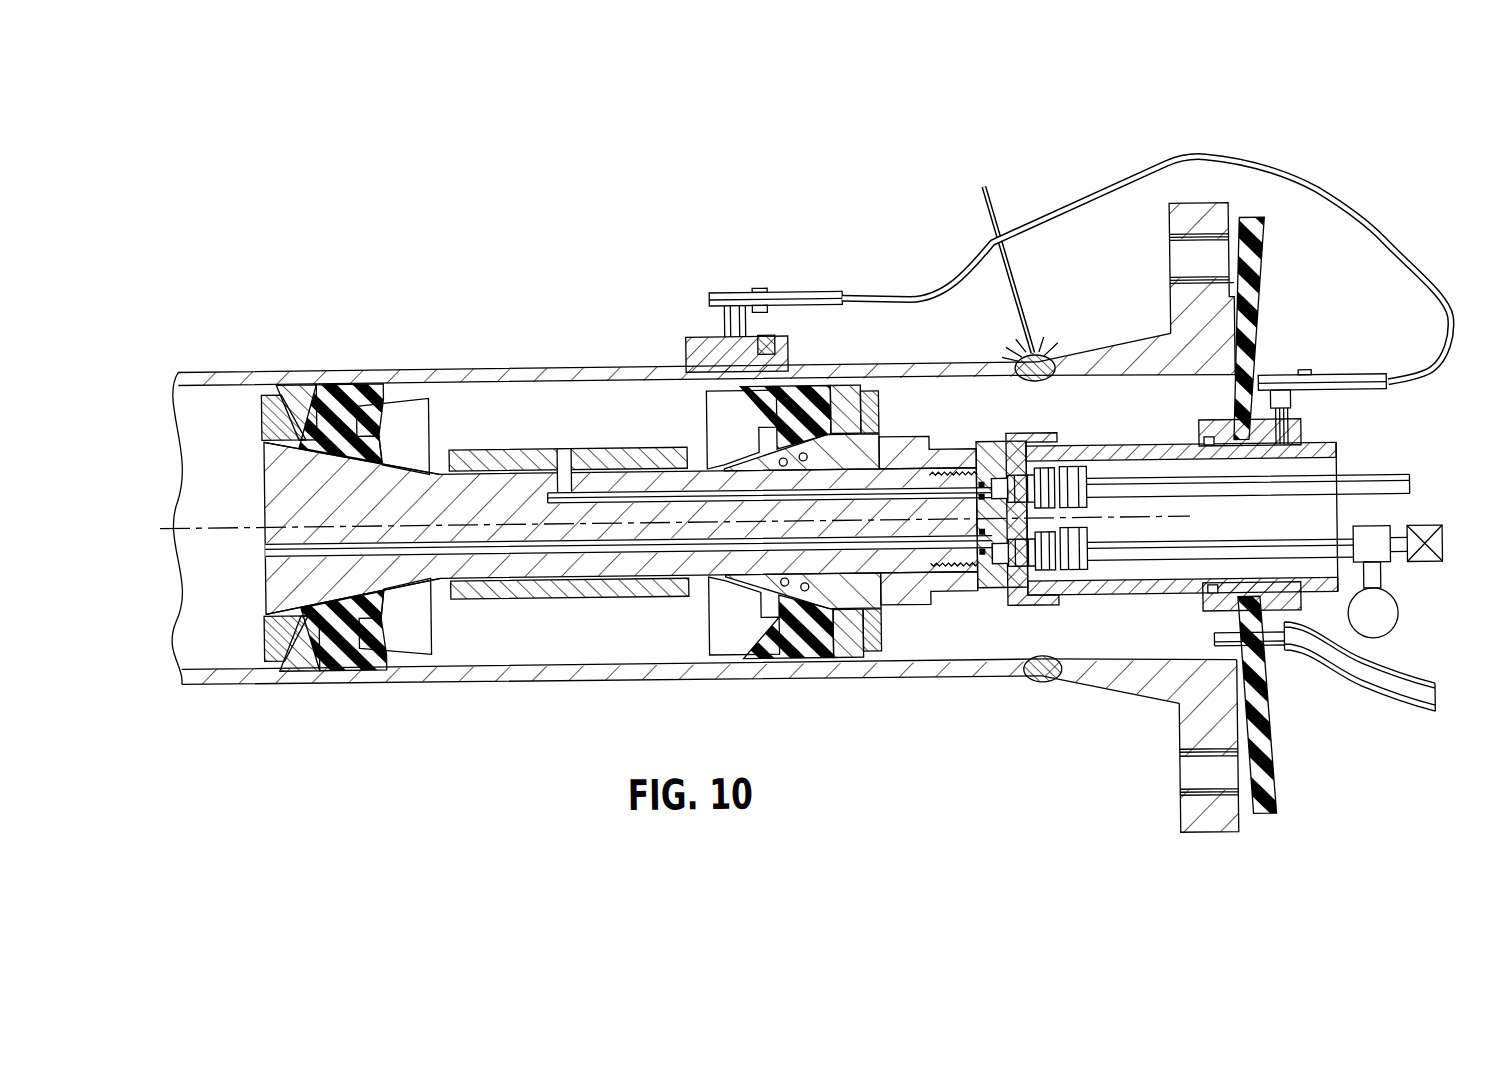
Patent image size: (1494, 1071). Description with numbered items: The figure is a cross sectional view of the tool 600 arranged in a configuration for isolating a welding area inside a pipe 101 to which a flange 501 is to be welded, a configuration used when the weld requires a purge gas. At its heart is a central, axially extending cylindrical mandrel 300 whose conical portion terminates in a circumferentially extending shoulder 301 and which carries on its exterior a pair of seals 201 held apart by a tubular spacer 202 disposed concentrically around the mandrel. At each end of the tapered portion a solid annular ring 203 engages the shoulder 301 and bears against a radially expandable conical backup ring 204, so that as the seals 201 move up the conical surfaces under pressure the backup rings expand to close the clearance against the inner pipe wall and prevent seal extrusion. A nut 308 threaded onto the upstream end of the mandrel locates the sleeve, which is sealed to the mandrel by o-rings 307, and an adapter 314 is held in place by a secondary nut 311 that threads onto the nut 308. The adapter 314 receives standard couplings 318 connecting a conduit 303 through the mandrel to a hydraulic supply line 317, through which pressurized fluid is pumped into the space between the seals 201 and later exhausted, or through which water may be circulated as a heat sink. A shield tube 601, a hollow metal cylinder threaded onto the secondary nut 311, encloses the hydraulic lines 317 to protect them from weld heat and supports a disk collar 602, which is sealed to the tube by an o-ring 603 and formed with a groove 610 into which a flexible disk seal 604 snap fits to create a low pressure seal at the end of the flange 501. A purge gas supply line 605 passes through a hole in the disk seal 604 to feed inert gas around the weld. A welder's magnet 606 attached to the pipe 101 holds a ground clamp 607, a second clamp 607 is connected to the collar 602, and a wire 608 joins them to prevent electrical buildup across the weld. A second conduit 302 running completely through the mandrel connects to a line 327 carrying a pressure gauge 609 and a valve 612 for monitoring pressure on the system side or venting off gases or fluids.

The pipe 101 is at (470, 371).
The seals 201 is at (345, 392).
The tubular spacer 202 is at (535, 452).
The solid annular ring 203 is at (272, 410).
The radially expandable conical backup ring 204 is at (293, 397).
The mandrel 300 is at (612, 572).
The shoulder 301 is at (267, 443).
The second conduit 302 is at (262, 552).
The conduit 303 is at (620, 495).
The o-rings 307 is at (770, 463).
The nut 308 is at (930, 444).
The secondary nut 311 is at (985, 450).
The adapter 314 is at (998, 616).
The hydraulic supply line 317 is at (1398, 488).
The couplings 318 is at (1080, 458).
The line 327 is at (1187, 562).
The flange 501 is at (1128, 354).
The assembly 600 is at (447, 770).
The shield tube 601 is at (1089, 603).
The disk collar 602 is at (1216, 431).
The o-ring 603 is at (1200, 433).
The disk seal 604 is at (1262, 244).
The purge gas supply line 605 is at (1360, 700).
The welder's magnet 606 is at (690, 344).
The ground clamp 607 is at (790, 298).
The wire 608 is at (1132, 189).
The pressure gauge 609 is at (1397, 633).
The groove 610 is at (1307, 456).
The valve 612 is at (1430, 577).